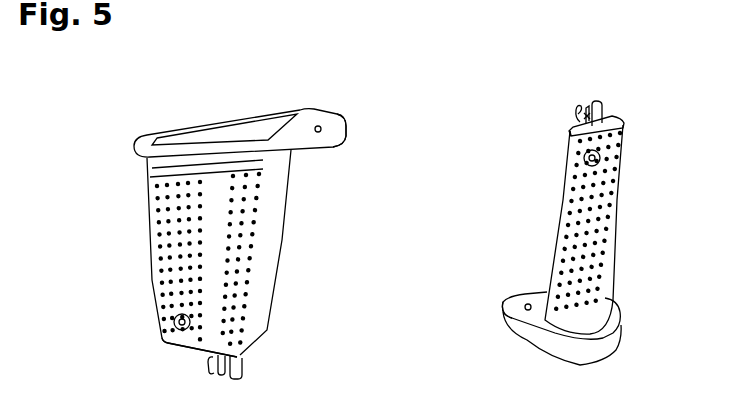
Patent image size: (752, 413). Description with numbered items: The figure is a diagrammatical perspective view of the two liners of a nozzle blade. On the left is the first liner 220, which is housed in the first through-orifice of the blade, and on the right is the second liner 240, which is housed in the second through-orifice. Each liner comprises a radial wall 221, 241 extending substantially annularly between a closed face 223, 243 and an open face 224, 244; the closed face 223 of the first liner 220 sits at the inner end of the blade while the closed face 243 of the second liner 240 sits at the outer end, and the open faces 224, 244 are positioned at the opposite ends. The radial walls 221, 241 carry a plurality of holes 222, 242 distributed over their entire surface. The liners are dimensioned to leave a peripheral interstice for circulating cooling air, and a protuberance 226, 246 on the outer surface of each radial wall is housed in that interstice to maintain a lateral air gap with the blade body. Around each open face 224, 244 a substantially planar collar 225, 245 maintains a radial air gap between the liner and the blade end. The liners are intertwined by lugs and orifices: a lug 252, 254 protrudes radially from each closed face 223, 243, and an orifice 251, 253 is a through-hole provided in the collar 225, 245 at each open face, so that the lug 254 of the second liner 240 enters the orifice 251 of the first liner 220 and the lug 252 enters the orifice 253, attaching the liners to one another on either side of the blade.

The first liner 220 is at (290, 259).
The radial wall 221 is at (135, 221).
The holes 222 is at (172, 257).
The closed face 223 is at (186, 346).
The open face 224 is at (197, 126).
The collar 225 is at (337, 144).
The protuberance 226 is at (170, 320).
The orifice 251 is at (316, 136).
The lug 252 is at (244, 364).
The second liner 240 is at (537, 234).
The radial wall 241 is at (634, 186).
The holes 242 is at (604, 270).
The closed face 243 is at (616, 127).
The open face 244 is at (615, 346).
The collar 245 is at (503, 315).
The protuberance 246 is at (583, 155).
The orifice 253 is at (528, 303).
The lug 254 is at (604, 113).